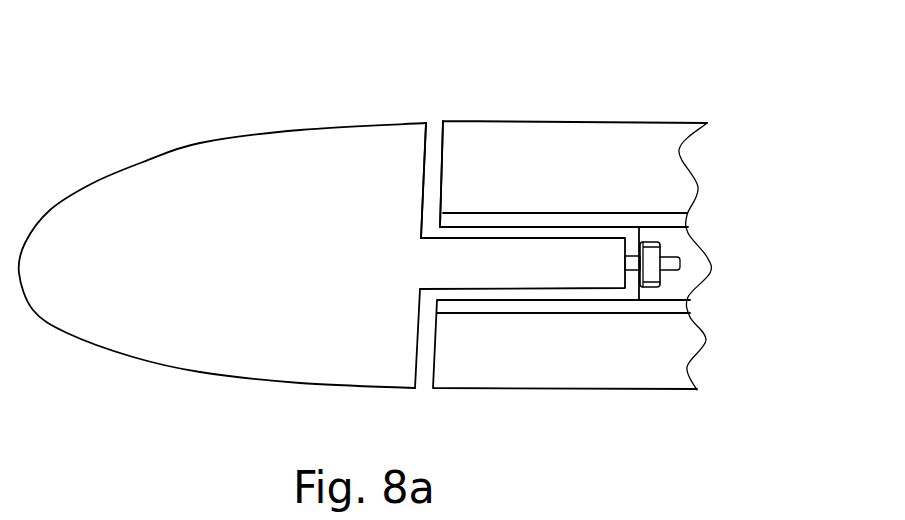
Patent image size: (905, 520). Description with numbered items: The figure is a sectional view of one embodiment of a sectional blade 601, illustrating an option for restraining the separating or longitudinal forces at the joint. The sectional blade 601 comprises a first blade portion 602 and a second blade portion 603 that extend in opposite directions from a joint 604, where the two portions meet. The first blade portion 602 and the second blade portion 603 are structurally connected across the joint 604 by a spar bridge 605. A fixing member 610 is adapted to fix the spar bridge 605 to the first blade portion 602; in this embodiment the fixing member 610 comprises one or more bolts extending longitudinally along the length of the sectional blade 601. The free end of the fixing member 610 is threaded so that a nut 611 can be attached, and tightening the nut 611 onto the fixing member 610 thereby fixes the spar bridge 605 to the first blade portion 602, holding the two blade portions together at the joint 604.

The sectional blade 601 is at (124, 100).
The first blade portion 602 is at (537, 366).
The second blade portion 603 is at (240, 340).
The joint 604 is at (435, 108).
The spar bridge 605 is at (475, 265).
The fixing member 610 is at (632, 263).
The nut 611 is at (660, 243).